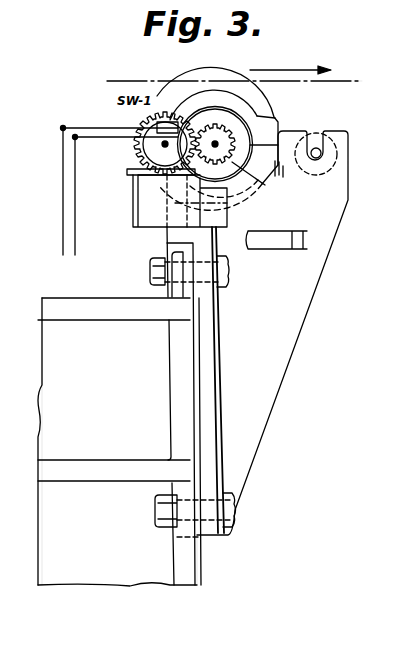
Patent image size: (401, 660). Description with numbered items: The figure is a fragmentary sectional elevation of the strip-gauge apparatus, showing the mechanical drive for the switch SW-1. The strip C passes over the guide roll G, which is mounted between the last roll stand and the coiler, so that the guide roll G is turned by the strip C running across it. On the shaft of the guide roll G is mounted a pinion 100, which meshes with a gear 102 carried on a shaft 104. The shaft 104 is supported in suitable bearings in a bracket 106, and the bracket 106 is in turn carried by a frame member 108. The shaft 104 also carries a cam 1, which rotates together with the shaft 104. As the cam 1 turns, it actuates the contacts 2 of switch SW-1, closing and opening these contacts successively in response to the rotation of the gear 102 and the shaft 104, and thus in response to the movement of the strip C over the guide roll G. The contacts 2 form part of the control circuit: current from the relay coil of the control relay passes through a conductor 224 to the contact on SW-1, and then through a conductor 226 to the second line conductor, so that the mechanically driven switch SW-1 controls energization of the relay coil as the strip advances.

The cam 1 is at (140, 157).
The contacts 2 is at (160, 122).
The pinion 100 is at (257, 182).
The gear 102 is at (137, 143).
The shaft 104 is at (140, 165).
The bracket 106 is at (148, 207).
The frame member 108 is at (213, 327).
The conductor 224 is at (63, 216).
The conductor 226 is at (75, 241).
The guide roll G is at (203, 84).
The strip C is at (348, 80).